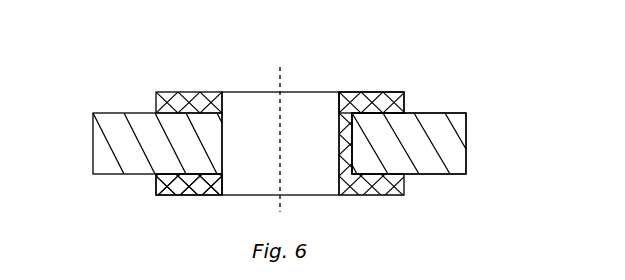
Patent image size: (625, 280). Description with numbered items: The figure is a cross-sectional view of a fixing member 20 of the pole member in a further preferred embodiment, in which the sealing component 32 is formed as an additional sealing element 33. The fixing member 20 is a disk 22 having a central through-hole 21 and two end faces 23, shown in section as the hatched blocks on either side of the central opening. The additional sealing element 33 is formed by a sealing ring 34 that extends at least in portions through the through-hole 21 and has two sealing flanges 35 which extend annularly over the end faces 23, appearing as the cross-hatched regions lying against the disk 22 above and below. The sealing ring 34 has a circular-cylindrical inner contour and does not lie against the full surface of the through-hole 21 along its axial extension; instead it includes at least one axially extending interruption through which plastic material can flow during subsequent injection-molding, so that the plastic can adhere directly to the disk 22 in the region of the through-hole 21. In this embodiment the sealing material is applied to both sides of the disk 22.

The fixing member 20 is at (485, 112).
The central through-hole 21 is at (323, 183).
The disk 22 is at (462, 148).
The end faces 23 is at (115, 175).
The sealing component 32 is at (188, 97).
The additional sealing element 33 is at (189, 184).
The sealing ring 34 is at (339, 118).
The sealing flanges 35 is at (370, 100).